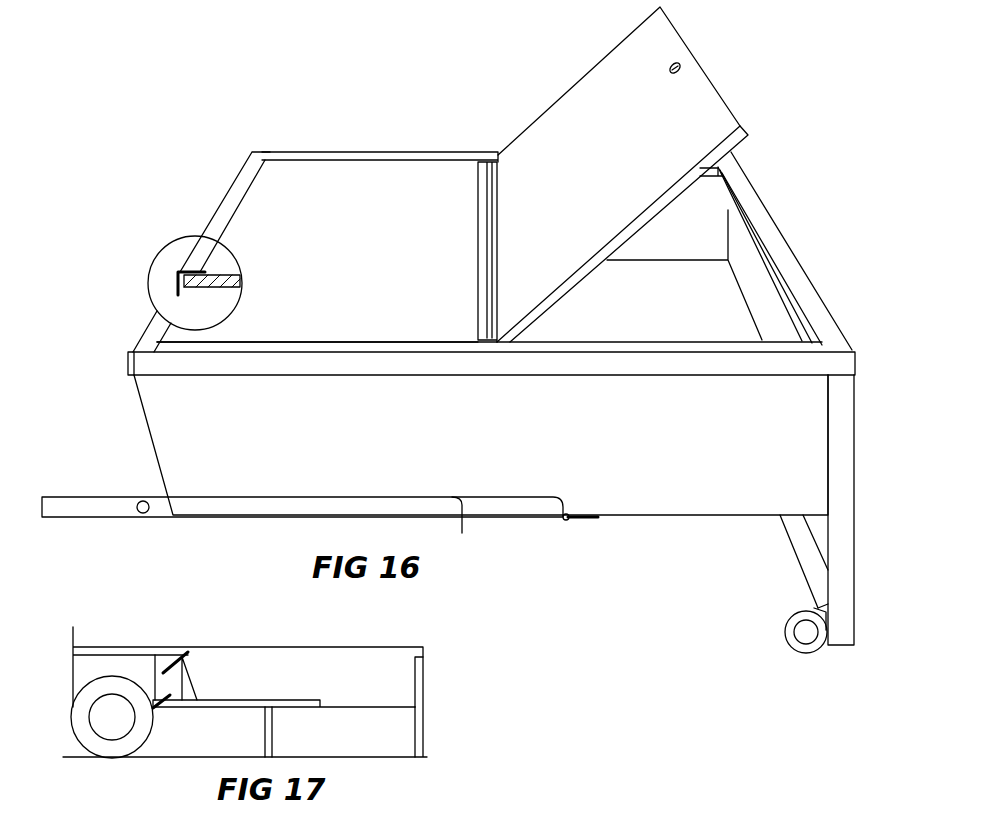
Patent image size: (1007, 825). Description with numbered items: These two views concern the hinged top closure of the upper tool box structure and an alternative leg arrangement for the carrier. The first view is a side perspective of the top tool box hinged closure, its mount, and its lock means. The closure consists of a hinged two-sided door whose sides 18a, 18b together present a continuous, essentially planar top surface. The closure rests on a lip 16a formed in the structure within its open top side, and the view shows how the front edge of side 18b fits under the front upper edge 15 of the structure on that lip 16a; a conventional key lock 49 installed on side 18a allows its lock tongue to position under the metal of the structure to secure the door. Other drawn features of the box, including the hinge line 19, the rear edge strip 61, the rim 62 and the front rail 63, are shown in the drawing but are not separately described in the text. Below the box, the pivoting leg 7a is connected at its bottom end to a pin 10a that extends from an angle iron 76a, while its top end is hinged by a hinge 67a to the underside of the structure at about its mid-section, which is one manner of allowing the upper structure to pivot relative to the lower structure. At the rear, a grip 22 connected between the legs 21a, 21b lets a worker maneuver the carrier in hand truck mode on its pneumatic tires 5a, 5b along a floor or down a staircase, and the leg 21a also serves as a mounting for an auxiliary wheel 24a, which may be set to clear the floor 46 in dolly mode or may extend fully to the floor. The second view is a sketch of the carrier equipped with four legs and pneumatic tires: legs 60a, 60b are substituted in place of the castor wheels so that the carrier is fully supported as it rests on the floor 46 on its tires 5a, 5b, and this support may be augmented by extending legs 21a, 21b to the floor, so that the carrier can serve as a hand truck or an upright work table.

In FIG. 16, the front upper edge 15 is at (250, 170).
In FIG. 16, the rear edge strip 61 is at (390, 152).
In FIG. 16, the hinge 19 is at (490, 160).
In FIG. 16, the door side of closure 18 18a is at (563, 190).
In FIG. 16, the key lock 49 is at (675, 63).
In FIG. 16, the rim 62 is at (748, 203).
In FIG. 16, the lip 16a is at (752, 235).
In FIG. 16, the door side of closure 18 18b is at (390, 262).
In FIG. 16, the front rail 63 is at (412, 365).
In FIG. 16, the angle iron 76a is at (263, 507).
In FIG. 16, the pin 10a is at (145, 513).
In FIG. 16, the leg 7a is at (492, 507).
In FIG. 16, the hinge 67a is at (578, 520).
In FIG. 16, the grip 22 is at (810, 560).
In FIG. 16, the leg 21a is at (838, 598).
In FIG. 17, the leg 21a is at (420, 703).
In FIG. 16, the auxiliary wheel 24a is at (786, 627).
In FIG. 17, the leg 60b is at (265, 713).
In FIG. 17, the leg 60a is at (271, 745).
In FIG. 17, the pneumatic tire 5b is at (77, 742).
In FIG. 17, the pneumatic tire 5a is at (125, 745).
In FIG. 17, the floor 46 is at (340, 760).
In FIG. 17, the leg 21b is at (423, 715).